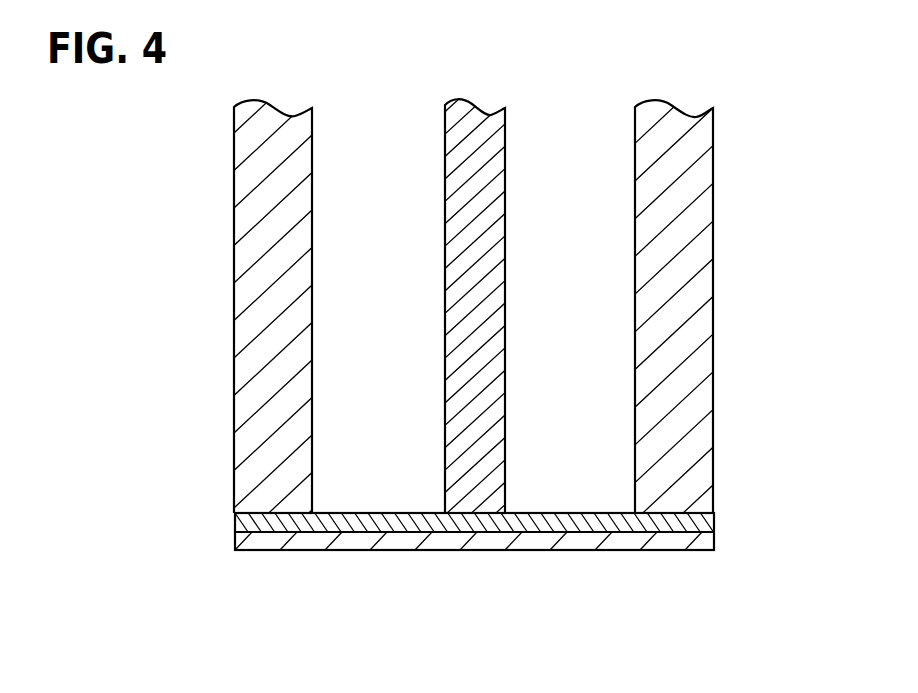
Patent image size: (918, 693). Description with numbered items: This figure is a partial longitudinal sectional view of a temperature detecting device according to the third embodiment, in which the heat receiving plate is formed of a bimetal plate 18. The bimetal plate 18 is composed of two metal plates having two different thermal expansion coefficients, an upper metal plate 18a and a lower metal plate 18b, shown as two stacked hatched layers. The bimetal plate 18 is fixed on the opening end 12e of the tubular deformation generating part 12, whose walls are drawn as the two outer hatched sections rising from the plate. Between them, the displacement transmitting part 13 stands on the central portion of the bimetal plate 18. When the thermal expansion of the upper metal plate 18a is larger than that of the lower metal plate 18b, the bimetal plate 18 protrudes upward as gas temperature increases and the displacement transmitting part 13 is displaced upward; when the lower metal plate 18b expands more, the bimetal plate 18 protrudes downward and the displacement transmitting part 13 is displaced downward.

The deformation generating part 12 is at (295, 197).
The displacement transmitting part 13 is at (490, 212).
The bimetal plate 18 is at (722, 513).
The upper metal plate 18a is at (392, 522).
The lower metal plate 18b is at (407, 538).
The opening end 12e is at (665, 517).